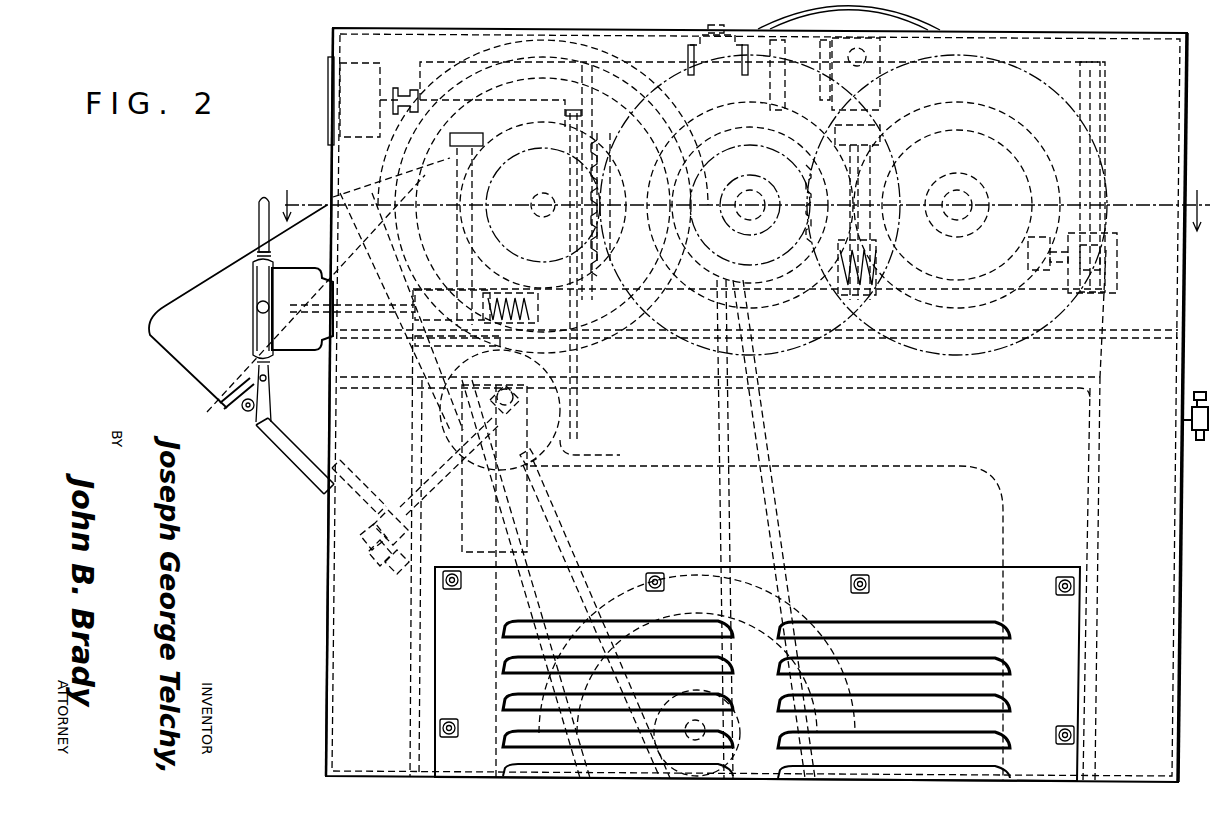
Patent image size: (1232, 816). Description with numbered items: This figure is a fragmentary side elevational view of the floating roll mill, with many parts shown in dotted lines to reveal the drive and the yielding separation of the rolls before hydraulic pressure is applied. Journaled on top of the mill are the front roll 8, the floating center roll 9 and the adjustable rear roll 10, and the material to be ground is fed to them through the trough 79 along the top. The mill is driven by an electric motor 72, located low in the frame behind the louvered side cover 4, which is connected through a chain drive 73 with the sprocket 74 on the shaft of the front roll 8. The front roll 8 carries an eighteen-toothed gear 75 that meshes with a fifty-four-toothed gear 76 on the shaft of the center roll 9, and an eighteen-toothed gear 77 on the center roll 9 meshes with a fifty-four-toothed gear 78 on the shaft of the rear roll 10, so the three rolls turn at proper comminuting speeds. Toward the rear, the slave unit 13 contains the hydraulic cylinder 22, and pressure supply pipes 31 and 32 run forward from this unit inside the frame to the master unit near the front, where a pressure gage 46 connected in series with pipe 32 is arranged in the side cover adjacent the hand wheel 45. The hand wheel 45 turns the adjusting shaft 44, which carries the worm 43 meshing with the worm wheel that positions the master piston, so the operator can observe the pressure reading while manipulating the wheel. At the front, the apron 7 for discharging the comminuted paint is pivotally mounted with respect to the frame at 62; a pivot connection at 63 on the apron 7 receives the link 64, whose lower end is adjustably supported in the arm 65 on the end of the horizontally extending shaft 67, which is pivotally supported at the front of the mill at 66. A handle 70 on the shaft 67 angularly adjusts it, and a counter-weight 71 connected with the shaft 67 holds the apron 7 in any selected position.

The side cover 4 is at (745, 197).
The apron 7 is at (180, 350).
The front roll 8 is at (543, 196).
The floating center roll 9 is at (750, 205).
The adjustable rear roll 10 is at (945, 262).
The slave unit 13 is at (1108, 273).
The hydraulic cylinder 22 is at (1108, 245).
The pressure supply pipe 31 is at (1100, 82).
The pressure supply pipe 32 is at (1100, 142).
The worm 43 is at (494, 229).
The adjusting shaft 44 is at (372, 312).
The hand wheel 45 is at (258, 222).
The pressure gage 46 is at (328, 103).
The apron pivot 62 is at (395, 268).
The pivot connection 63 is at (243, 412).
The link 64 is at (290, 475).
The arm 65 is at (358, 545).
The pivotal support 66 is at (395, 512).
The horizontally extending shaft 67 is at (390, 575).
The handle 70 is at (360, 470).
The counter-weight 71 is at (425, 436).
The motor 72 is at (712, 715).
The chain drive 73 is at (552, 518).
The sprocket 74 is at (395, 318).
The gear 75 is at (565, 182).
The gear 76 is at (718, 65).
The gear 77 is at (780, 182).
The gear 78 is at (888, 172).
The trough 79 is at (940, 22).